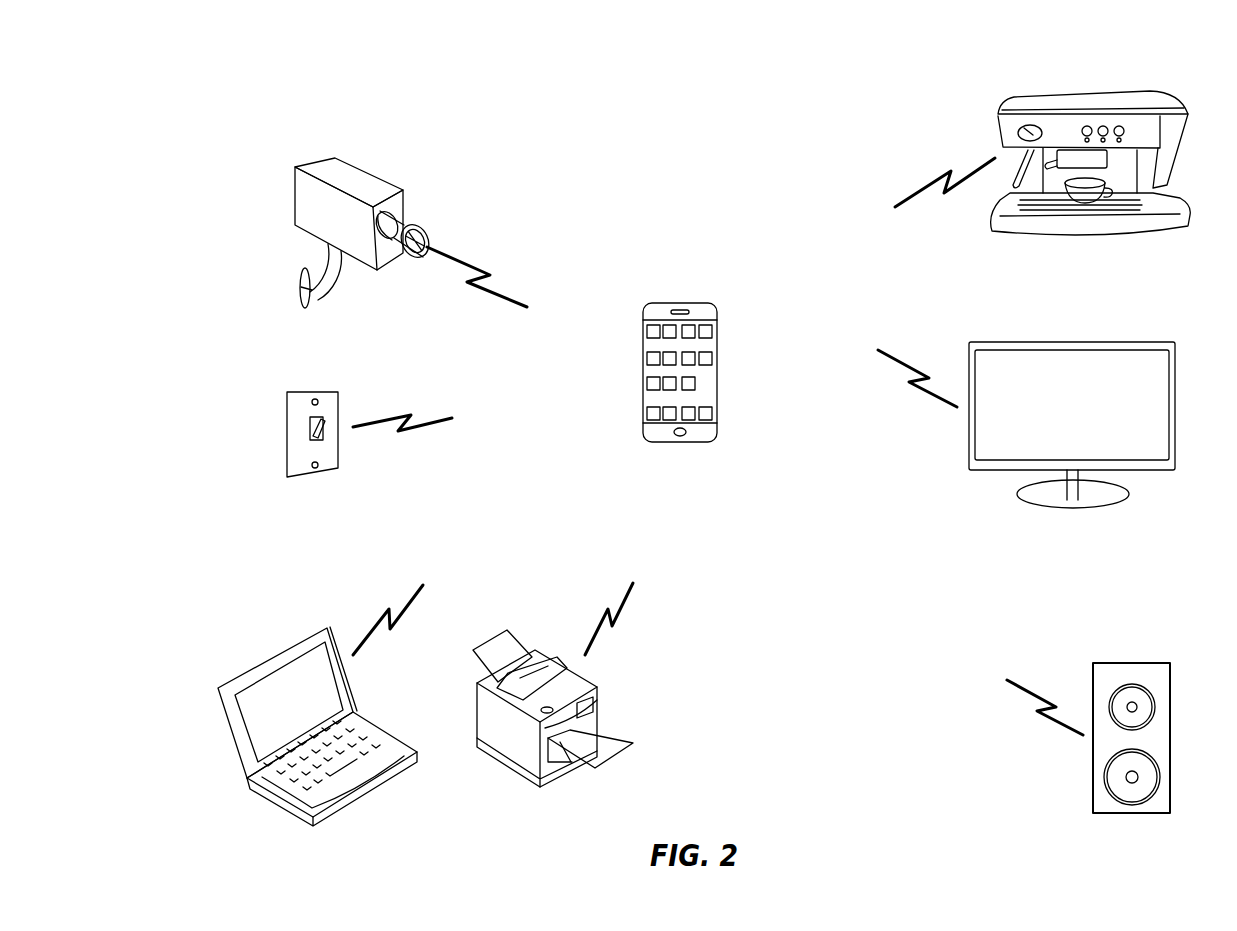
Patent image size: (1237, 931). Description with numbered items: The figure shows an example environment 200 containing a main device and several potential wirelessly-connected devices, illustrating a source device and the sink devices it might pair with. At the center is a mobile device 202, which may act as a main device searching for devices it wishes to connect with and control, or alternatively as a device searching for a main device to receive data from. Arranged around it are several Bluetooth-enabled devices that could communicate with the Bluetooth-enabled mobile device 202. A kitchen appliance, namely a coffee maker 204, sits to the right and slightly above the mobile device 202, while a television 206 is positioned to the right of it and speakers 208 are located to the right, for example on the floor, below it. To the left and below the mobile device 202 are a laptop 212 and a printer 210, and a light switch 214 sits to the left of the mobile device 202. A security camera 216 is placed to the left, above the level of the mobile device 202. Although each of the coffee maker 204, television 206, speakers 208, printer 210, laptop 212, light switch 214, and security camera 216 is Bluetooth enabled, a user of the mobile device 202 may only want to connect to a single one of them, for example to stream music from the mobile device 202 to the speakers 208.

The environment 200 is at (191, 73).
The mobile device 202 is at (692, 302).
The coffee maker 204 is at (1120, 90).
The television 206 is at (1117, 340).
The speakers 208 is at (1137, 663).
The printer 210 is at (558, 787).
The laptop 212 is at (352, 808).
The light switch 214 is at (310, 392).
The security camera 216 is at (363, 170).